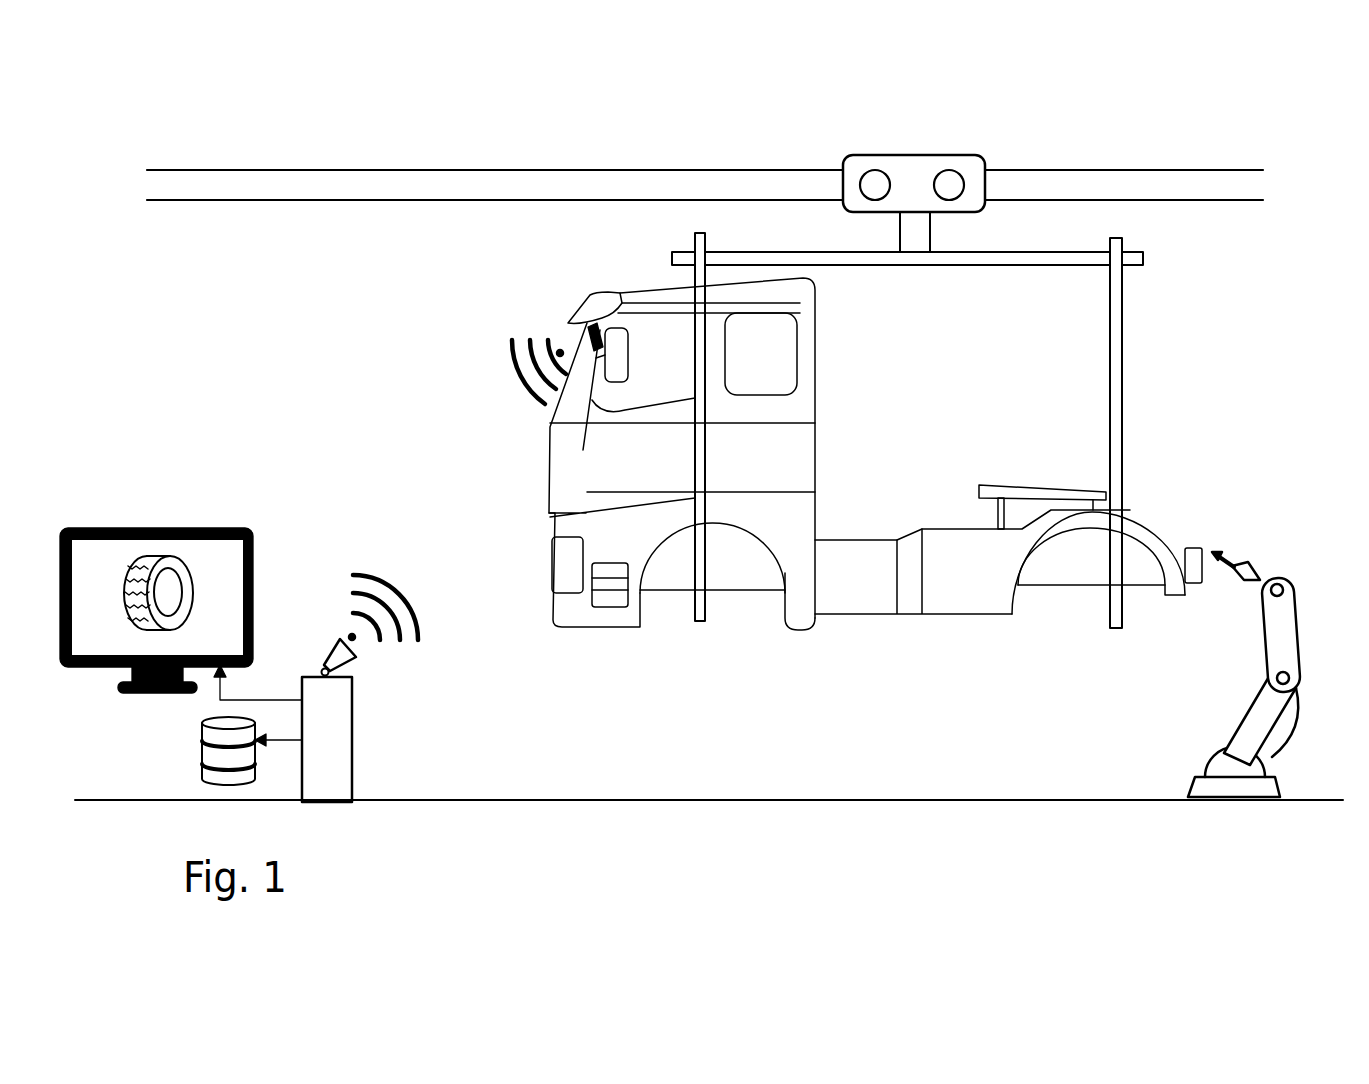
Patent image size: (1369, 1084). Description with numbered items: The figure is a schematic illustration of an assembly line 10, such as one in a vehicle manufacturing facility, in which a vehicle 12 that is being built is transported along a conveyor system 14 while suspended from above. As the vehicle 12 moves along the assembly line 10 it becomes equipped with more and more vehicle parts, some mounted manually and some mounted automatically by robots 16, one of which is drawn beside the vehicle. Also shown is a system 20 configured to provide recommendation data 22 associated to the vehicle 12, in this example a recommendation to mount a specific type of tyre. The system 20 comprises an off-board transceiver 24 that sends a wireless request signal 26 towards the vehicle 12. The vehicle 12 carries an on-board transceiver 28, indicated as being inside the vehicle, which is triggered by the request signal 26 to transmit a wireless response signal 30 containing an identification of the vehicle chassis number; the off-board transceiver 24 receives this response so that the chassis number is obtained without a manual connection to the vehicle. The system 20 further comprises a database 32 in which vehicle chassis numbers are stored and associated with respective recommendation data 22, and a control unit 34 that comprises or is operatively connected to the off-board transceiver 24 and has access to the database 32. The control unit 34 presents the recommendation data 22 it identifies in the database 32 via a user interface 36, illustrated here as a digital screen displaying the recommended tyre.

The assembly line 10 is at (226, 132).
The vehicle 12 is at (548, 455).
The conveyor system 14 is at (465, 186).
The robot 16 is at (1267, 655).
The system 20 is at (316, 474).
The recommendation data 22 is at (135, 565).
The off-board transceiver 24 is at (353, 660).
The wireless request signal 26 is at (418, 622).
The on-board transceiver 28 is at (589, 331).
The wireless response signal 30 is at (510, 362).
The database 32 is at (200, 753).
The control unit 34 is at (352, 752).
The user interface 36 is at (180, 527).